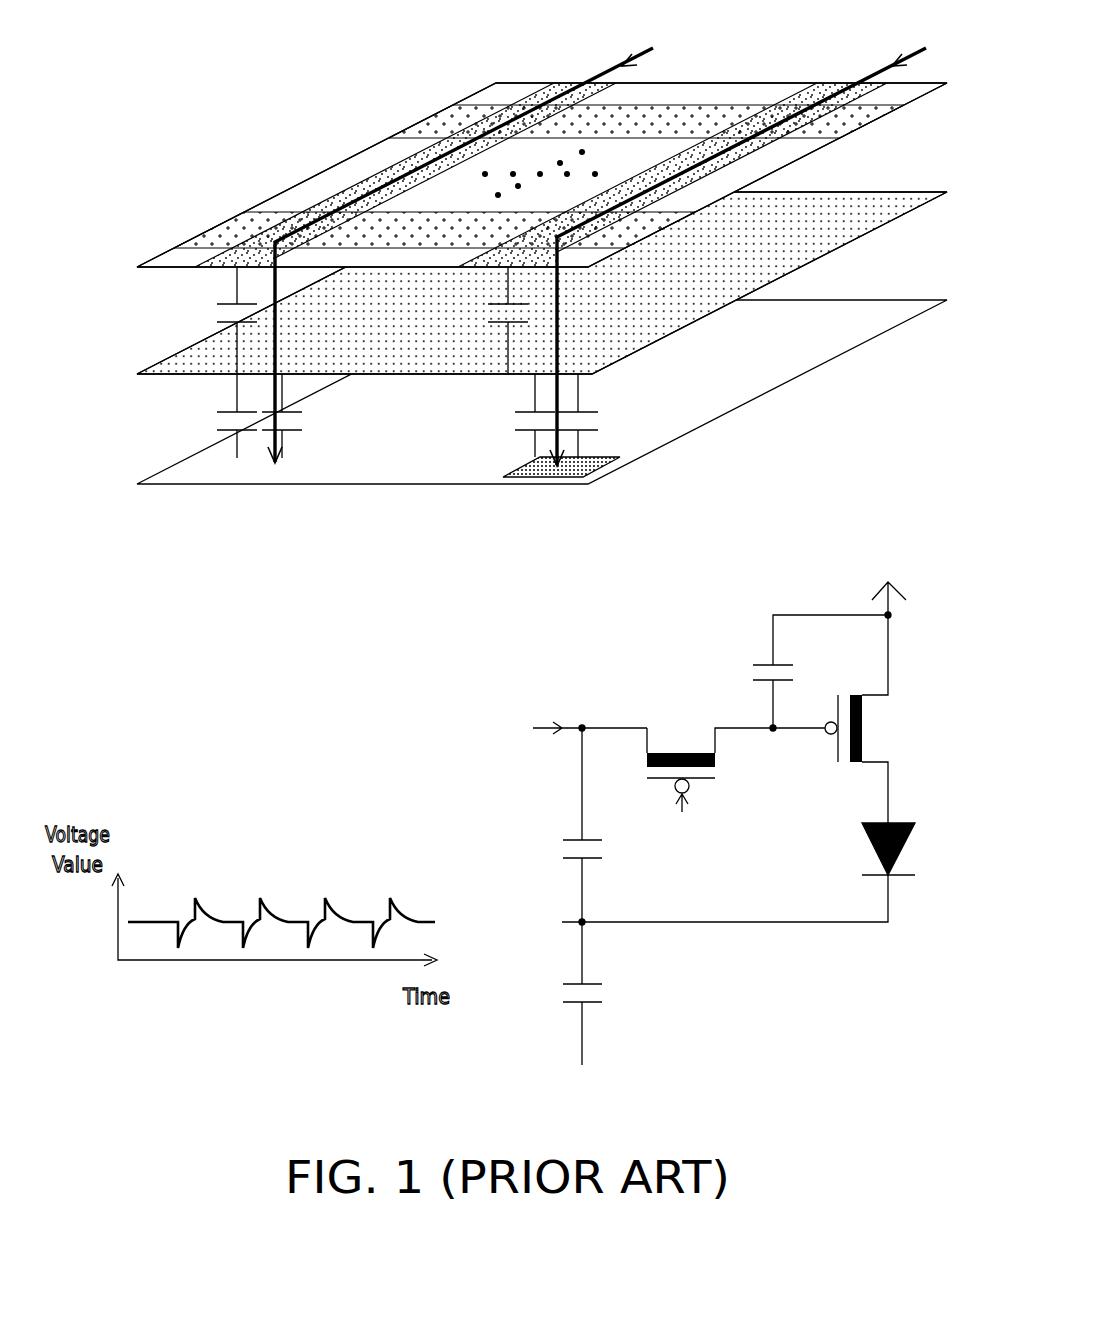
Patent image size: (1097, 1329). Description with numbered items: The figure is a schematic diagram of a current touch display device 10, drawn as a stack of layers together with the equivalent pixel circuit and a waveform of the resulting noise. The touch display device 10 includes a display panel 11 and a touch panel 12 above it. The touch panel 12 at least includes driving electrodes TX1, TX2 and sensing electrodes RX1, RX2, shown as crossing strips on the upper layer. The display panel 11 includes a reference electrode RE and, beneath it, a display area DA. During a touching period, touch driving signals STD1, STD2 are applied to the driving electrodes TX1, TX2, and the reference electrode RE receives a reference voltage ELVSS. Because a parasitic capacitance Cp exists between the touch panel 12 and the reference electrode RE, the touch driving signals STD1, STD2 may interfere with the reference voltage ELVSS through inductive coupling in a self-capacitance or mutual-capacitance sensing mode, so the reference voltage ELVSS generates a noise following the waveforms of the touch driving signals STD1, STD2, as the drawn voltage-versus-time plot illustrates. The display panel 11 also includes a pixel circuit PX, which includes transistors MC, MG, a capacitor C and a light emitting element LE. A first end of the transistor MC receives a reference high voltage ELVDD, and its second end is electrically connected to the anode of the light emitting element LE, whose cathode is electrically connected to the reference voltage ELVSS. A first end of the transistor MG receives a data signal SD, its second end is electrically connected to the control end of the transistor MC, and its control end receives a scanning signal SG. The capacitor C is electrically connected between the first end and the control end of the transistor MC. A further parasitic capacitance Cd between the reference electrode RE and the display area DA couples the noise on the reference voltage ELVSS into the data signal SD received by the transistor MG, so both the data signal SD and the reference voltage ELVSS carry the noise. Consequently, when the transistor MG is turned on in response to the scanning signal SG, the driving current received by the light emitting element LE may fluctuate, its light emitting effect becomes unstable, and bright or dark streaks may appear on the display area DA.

The touch display device 10 is at (502, 556).
The display panel 11 is at (497, 360).
The touch panel 12 is at (499, 166).
The reference electrode RE is at (517, 295).
The display area DA is at (127, 462).
The sensing electrode RX1 is at (449, 107).
The sensing electrode RX2 is at (227, 224).
The driving electrode TX1 is at (558, 88).
The driving electrode TX2 is at (828, 88).
The touch driving signal STD1 is at (479, 242).
The touch driving signal STD2 is at (755, 245).
The reference voltage ELVSS is at (922, 209).
The reference high voltage ELVDD is at (890, 583).
The parasitic capacitance Cp is at (393, 666).
The parasitic capacitance Cd is at (393, 648).
The pixel circuit PX is at (598, 478).
The capacitor C is at (820, 671).
The transistor MG is at (736, 742).
The transistor MC is at (870, 719).
The scanning signal SG is at (681, 809).
The data signal SD is at (574, 730).
The light emitting element LE is at (904, 849).